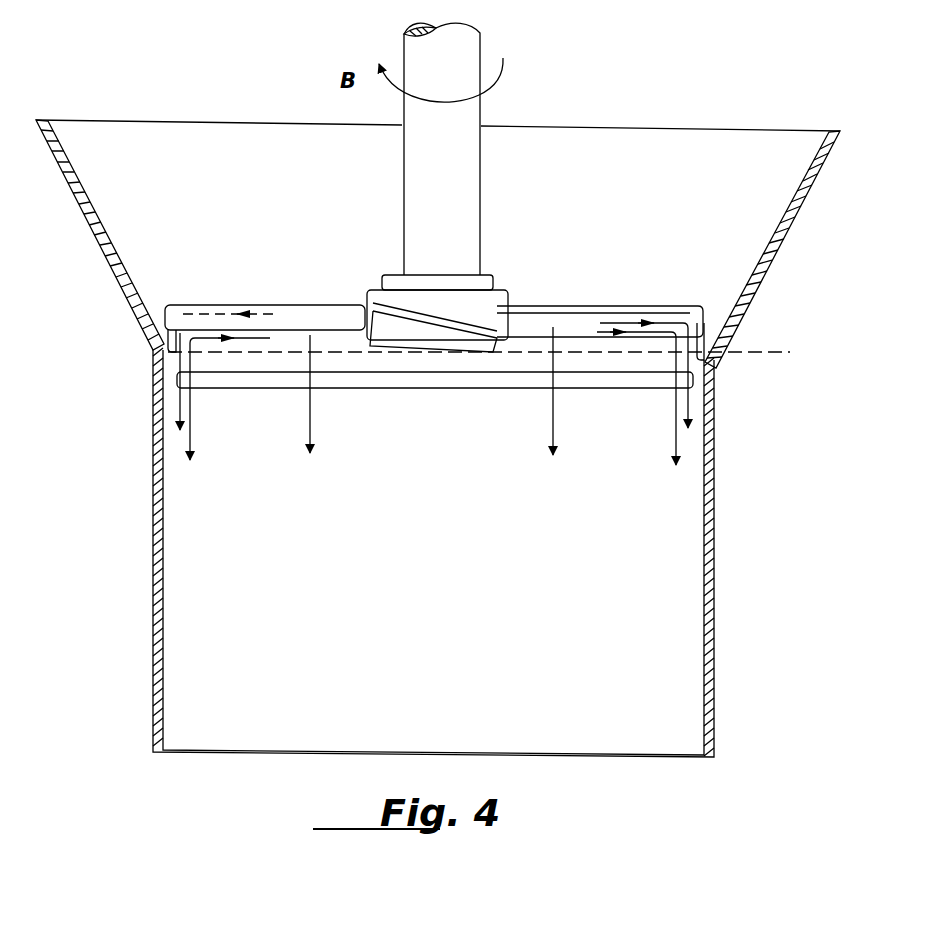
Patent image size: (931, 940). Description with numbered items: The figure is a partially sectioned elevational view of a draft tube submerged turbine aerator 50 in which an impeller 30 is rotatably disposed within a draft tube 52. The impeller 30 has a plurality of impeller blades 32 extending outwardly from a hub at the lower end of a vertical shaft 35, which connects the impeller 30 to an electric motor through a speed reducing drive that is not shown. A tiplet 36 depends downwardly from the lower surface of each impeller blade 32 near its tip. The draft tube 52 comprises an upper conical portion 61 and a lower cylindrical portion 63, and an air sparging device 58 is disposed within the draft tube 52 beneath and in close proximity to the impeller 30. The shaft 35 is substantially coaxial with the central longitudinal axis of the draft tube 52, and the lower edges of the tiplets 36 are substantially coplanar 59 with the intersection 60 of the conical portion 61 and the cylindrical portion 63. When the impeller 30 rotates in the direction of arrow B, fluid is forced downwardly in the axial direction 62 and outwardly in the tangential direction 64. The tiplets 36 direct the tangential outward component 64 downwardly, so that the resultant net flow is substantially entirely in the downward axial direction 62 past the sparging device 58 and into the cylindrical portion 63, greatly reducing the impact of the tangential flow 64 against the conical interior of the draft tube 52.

The impeller 30 is at (514, 268).
The impeller blade 32 is at (395, 302).
The shaft 35 is at (462, 56).
The tiplet 36 is at (140, 352).
The draft tube submerged turbine aerator 50 is at (610, 112).
The draft tube 52 is at (152, 440).
The air sparging device 58 is at (421, 390).
The coplanar 59 is at (793, 358).
The intersection 60 is at (712, 380).
The conical portion 61 is at (776, 243).
The downward flow arrows 62 is at (312, 402).
The cylindrical portion 63 is at (716, 572).
The tangential outward flow arrows 64 is at (205, 305).